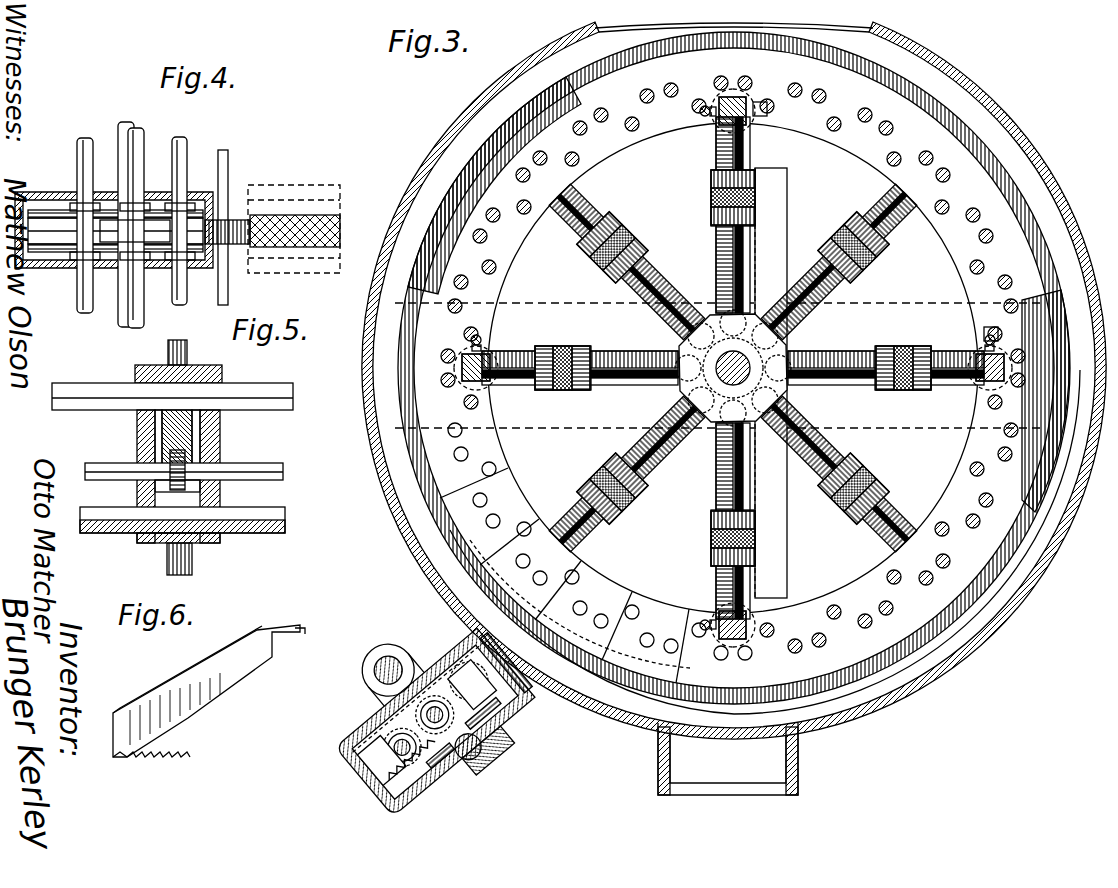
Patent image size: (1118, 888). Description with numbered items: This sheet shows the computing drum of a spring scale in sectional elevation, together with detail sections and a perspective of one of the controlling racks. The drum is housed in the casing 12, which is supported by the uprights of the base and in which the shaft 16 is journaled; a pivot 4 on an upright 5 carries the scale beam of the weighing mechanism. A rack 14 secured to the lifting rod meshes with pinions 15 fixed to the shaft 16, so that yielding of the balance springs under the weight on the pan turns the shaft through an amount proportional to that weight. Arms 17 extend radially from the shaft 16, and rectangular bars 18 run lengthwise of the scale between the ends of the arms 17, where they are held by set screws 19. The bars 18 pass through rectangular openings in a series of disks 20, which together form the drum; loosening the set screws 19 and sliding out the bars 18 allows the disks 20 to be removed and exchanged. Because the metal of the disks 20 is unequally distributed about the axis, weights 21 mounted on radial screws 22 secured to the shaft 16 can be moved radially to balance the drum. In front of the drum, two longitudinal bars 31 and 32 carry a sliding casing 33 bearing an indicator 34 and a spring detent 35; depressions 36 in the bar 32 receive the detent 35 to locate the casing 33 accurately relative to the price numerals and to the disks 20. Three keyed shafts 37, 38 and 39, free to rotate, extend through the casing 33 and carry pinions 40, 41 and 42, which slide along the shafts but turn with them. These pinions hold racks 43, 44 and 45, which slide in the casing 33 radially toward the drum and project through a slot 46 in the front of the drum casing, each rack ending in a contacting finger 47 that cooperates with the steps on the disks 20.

In FIG. 3, the pivot 4 is at (580, 545).
In FIG. 3, the upright 5 is at (380, 650).
In FIG. 3, the casing 12 is at (888, 702).
In FIG. 3, the rack 14 is at (790, 548).
In FIG. 3, the pinions 15 is at (790, 342).
In FIG. 3, the shaft 16 is at (770, 385).
In FIG. 3, the arms 17 is at (733, 368).
In FIG. 3, the rectangular bars 18 is at (733, 385).
In FIG. 3, the set screws 19 is at (875, 386).
In FIG. 3, the disks 20 is at (1020, 236).
In FIG. 4, the disks 20 is at (340, 258).
In FIG. 3, the weights 21 is at (733, 368).
In FIG. 3, the radial screws 22 is at (732, 367).
In FIG. 3, the bar 31 is at (419, 702).
In FIG. 5, the bar 31 is at (275, 388).
In FIG. 3, the bar 32 is at (488, 750).
In FIG. 4, the bar 32 is at (125, 125).
In FIG. 5, the bar 32 is at (285, 525).
In FIG. 3, the casing 33 is at (426, 723).
In FIG. 4, the casing 33 is at (165, 268).
In FIG. 5, the casing 33 is at (200, 488).
In FIG. 5, the indicator 34 is at (168, 350).
In FIG. 3, the spring detent 35 is at (468, 746).
In FIG. 5, the spring detent 35 is at (170, 550).
In FIG. 3, the depressions 36 is at (435, 715).
In FIG. 5, the depressions 36 is at (230, 535).
In FIG. 3, the shaft 37 is at (469, 681).
In FIG. 4, the shaft 37 is at (185, 140).
In FIG. 4, the shaft 38 is at (140, 140).
In FIG. 5, the shaft 38 is at (275, 468).
In FIG. 3, the shaft 39 is at (402, 748).
In FIG. 4, the shaft 39 is at (85, 140).
In FIG. 3, the pinion 40 is at (506, 663).
In FIG. 4, the pinion 40 is at (215, 212).
In FIG. 3, the pinion 41 is at (483, 713).
In FIG. 4, the pinion 41 is at (140, 230).
In FIG. 5, the pinion 41 is at (172, 488).
In FIG. 3, the pinion 42 is at (440, 755).
In FIG. 4, the pinion 42 is at (80, 258).
In FIG. 4, the rack 43 is at (40, 225).
In FIG. 5, the rack 43 is at (140, 430).
In FIG. 5, the rack 44 is at (165, 440).
In FIG. 3, the rack 45 is at (410, 758).
In FIG. 4, the rack 45 is at (45, 262).
In FIG. 5, the rack 45 is at (200, 440).
In FIG. 6, the rack 45 is at (192, 690).
In FIG. 3, the slot 46 is at (495, 650).
In FIG. 3, the contacting finger 47 is at (418, 697).
In FIG. 4, the contacting finger 47 is at (230, 250).
In FIG. 6, the contacting finger 47 is at (298, 628).